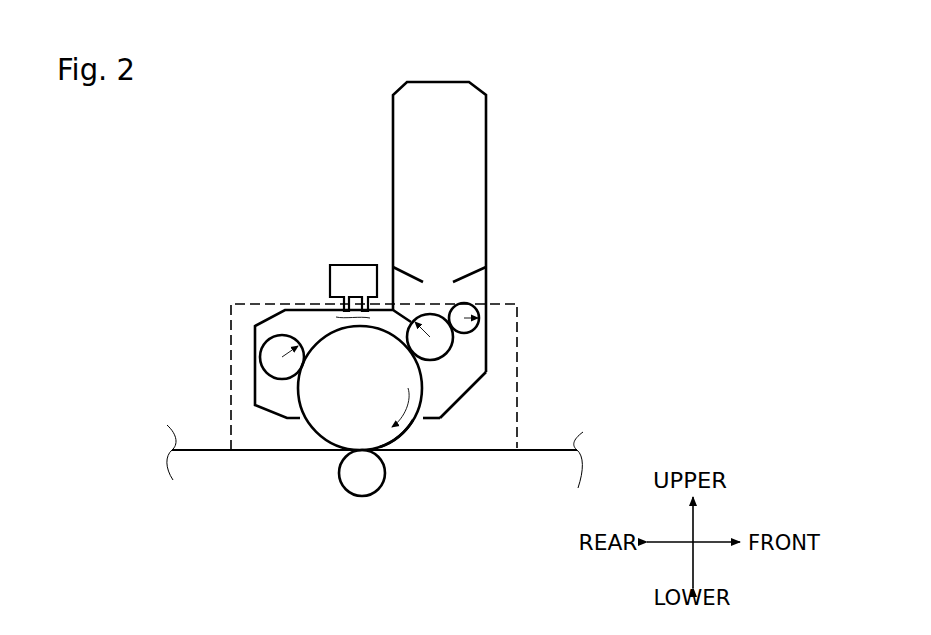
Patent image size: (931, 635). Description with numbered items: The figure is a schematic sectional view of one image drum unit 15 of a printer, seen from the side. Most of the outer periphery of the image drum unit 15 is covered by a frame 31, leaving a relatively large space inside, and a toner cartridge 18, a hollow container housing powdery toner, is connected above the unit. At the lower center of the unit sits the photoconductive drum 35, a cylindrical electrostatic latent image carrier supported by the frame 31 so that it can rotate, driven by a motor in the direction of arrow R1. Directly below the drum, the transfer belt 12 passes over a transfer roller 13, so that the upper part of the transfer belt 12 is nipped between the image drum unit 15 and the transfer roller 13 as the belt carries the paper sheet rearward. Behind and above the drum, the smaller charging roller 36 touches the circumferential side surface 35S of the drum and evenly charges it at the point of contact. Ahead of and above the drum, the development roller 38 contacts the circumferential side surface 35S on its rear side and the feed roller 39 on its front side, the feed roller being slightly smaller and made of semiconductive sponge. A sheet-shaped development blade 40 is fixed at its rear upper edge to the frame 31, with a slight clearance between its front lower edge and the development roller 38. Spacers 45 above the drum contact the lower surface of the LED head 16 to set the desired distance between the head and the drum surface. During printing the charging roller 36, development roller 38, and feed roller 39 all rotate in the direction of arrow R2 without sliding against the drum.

The toner cartridge 18 is at (486, 138).
The LED head 16 is at (355, 265).
The spacer 45 is at (328, 306).
The development blade 40 is at (409, 318).
The rotation direction of charging, development, and feed rollers R2 is at (470, 316).
The feed roller 39 is at (479, 329).
The development roller 38 is at (448, 362).
The charging roller 36 is at (265, 350).
The frame 31 is at (256, 410).
The image drum unit 15 is at (518, 434).
The photoconductive drum 35 is at (337, 432).
The circumferential side surface 35S is at (396, 446).
The rotation direction of photoconductive drum R1 is at (408, 420).
The transfer belt 12 is at (531, 450).
The transfer roller 13 is at (360, 485).